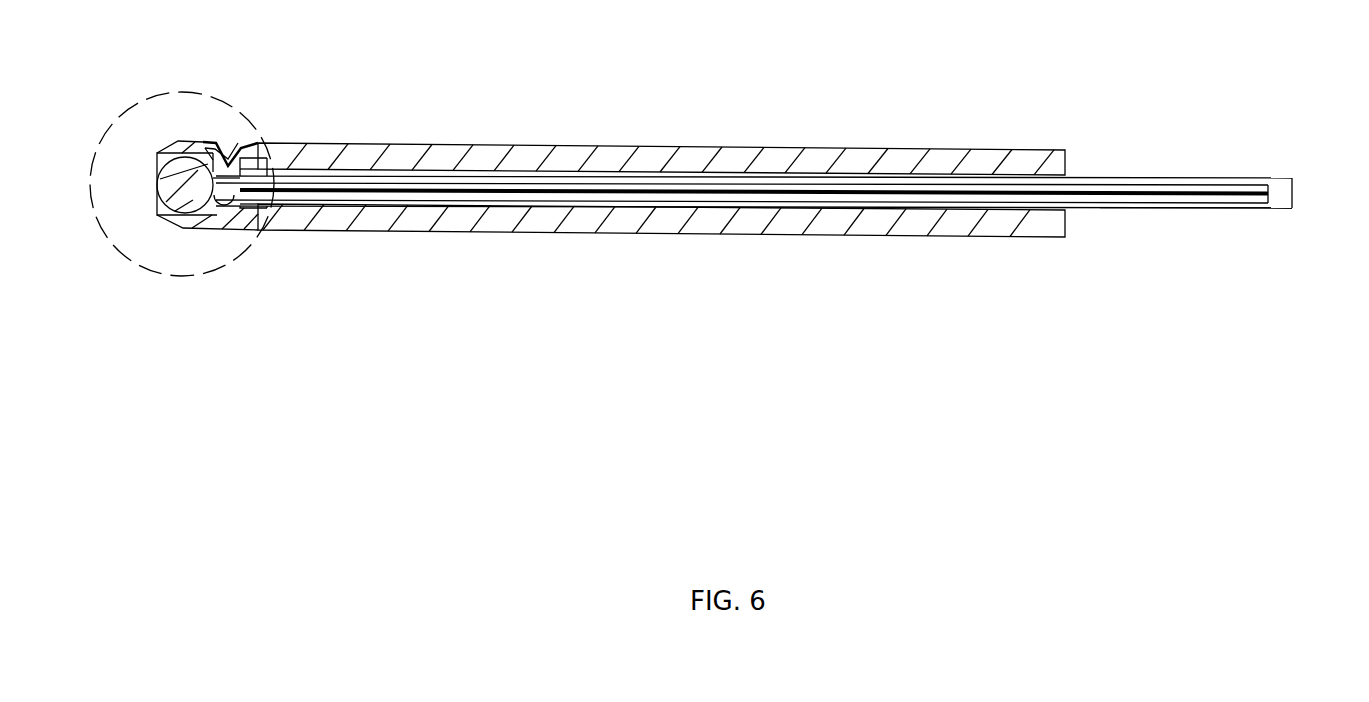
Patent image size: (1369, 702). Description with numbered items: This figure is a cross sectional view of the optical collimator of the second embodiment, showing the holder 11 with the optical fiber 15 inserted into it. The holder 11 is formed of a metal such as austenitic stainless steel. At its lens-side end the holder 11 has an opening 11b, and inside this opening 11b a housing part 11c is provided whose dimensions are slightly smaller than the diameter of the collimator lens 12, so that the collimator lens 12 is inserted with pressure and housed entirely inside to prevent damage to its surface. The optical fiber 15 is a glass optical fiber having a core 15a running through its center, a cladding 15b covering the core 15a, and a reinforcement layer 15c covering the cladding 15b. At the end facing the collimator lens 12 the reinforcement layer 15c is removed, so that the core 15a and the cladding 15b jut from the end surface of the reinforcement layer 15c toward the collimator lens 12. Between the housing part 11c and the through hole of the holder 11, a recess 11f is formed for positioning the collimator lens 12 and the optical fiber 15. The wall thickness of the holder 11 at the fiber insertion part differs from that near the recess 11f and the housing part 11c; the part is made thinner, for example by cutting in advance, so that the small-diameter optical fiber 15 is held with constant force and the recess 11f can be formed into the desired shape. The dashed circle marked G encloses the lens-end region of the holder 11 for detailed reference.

The holder 11 is at (600, 145).
The opening 11b is at (157, 165).
The housing part 11c is at (153, 207).
The recess 11f is at (226, 155).
The collimator lens 12 is at (165, 187).
The optical fiber 15 is at (781, 235).
The core 15a is at (1228, 196).
The cladding 15b is at (1247, 203).
The reinforcement layer 15c is at (1210, 210).
The enlarged region indicator G is at (208, 90).